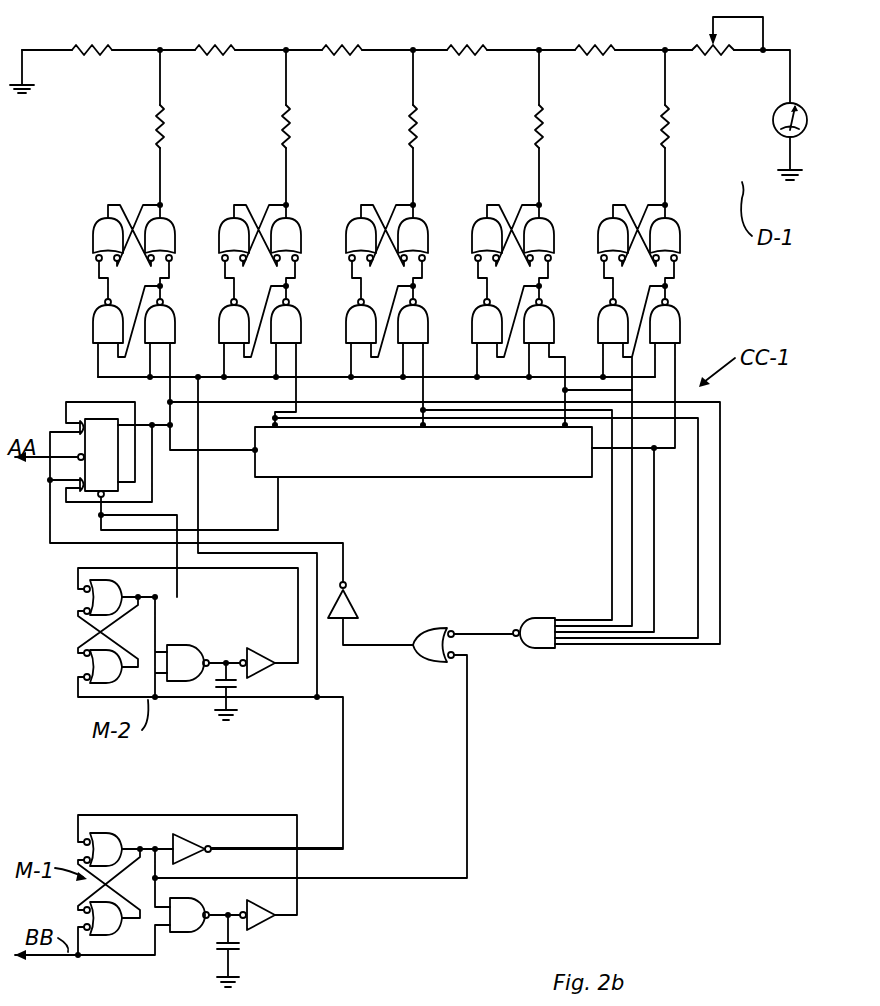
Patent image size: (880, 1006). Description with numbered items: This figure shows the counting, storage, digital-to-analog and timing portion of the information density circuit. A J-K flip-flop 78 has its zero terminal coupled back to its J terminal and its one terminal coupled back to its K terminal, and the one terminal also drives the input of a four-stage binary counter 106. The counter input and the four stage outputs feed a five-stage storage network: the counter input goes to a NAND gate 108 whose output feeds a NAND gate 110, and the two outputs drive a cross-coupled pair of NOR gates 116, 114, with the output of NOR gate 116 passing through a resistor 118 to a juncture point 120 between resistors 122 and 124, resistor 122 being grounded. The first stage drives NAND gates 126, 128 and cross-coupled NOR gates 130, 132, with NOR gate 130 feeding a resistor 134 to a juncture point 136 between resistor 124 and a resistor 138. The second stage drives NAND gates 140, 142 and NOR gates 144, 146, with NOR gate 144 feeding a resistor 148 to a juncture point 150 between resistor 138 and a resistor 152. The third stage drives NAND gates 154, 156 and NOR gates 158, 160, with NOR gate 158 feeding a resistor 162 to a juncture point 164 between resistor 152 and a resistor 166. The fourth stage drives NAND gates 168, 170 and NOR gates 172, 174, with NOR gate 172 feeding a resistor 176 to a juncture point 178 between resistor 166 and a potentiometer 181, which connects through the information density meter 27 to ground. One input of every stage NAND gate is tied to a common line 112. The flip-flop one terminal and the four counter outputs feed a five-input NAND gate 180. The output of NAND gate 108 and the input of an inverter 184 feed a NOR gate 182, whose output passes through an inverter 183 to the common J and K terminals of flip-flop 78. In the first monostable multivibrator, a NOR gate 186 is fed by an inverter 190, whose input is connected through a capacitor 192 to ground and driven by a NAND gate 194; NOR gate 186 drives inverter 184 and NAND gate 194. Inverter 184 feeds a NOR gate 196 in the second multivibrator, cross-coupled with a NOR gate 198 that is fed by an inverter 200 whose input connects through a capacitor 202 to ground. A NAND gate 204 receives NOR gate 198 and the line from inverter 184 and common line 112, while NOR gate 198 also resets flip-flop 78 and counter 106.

The information density meter 27 is at (806, 124).
The J-K flip-flop 78 is at (88, 418).
The four-stage binary counter 106 is at (337, 478).
The NAND gate 108 is at (176, 316).
The NAND gate 110 is at (92, 323).
The common line 112 is at (298, 340).
The NOR gate 114 is at (92, 236).
The NOR gate 116 is at (164, 222).
The resistor 118 is at (165, 128).
The juncture point 120 is at (160, 47).
The resistor 122 is at (80, 48).
The resistor 124 is at (216, 48).
The NAND gate 126 is at (301, 316).
The NAND gate 128 is at (218, 330).
The NOR gate 130 is at (290, 222).
The NOR gate 132 is at (218, 237).
The resistor 134 is at (291, 128).
The juncture point 136 is at (286, 47).
The resistor 138 is at (338, 48).
The NAND gate 140 is at (428, 316).
The NAND gate 142 is at (345, 330).
The NOR gate 144 is at (418, 222).
The NOR gate 146 is at (345, 237).
The resistor 148 is at (418, 128).
The juncture point 150 is at (413, 47).
The resistor 152 is at (470, 48).
The NAND gate 154 is at (554, 316).
The NAND gate 156 is at (471, 330).
The NOR gate 158 is at (544, 222).
The NOR gate 160 is at (471, 237).
The resistor 162 is at (544, 128).
The juncture point 164 is at (539, 47).
The resistor 166 is at (592, 48).
The NAND gate 168 is at (680, 318).
The NAND gate 170 is at (598, 321).
The NOR gate 172 is at (672, 222).
The NOR gate 174 is at (597, 237).
The resistor 176 is at (670, 128).
The juncture point 178 is at (665, 47).
The five-input NAND gate 180 is at (532, 648).
The potentiometer 181 is at (706, 52).
The NOR gate 182 is at (432, 628).
The inverter 183 is at (353, 606).
The inverter 184 is at (200, 845).
The NOR gate 186 is at (106, 833).
The inverter 190 is at (264, 926).
The capacitor 192 is at (222, 952).
The NAND gate 194 is at (196, 905).
The NOR gate 196 is at (87, 668).
The NOR gate 198 is at (87, 598).
The inverter 200 is at (258, 652).
The capacitor 202 is at (236, 708).
The NAND gate 204 is at (175, 645).